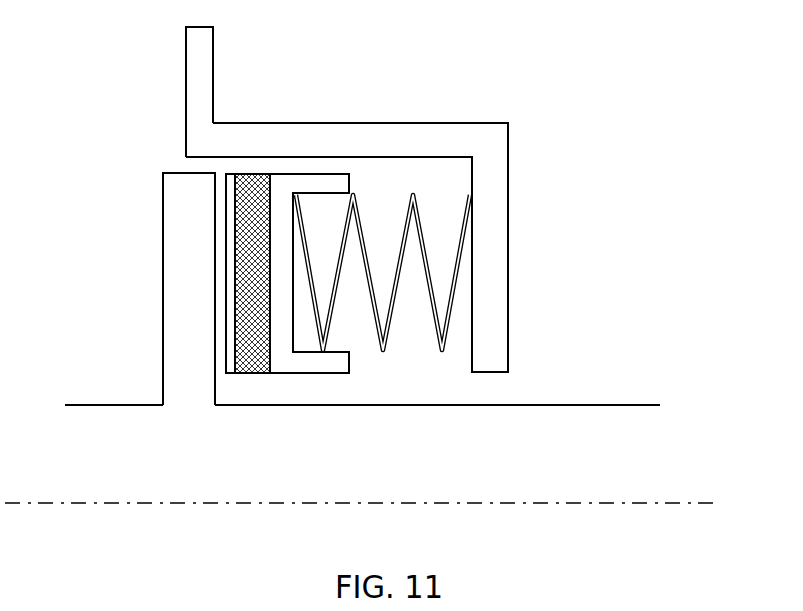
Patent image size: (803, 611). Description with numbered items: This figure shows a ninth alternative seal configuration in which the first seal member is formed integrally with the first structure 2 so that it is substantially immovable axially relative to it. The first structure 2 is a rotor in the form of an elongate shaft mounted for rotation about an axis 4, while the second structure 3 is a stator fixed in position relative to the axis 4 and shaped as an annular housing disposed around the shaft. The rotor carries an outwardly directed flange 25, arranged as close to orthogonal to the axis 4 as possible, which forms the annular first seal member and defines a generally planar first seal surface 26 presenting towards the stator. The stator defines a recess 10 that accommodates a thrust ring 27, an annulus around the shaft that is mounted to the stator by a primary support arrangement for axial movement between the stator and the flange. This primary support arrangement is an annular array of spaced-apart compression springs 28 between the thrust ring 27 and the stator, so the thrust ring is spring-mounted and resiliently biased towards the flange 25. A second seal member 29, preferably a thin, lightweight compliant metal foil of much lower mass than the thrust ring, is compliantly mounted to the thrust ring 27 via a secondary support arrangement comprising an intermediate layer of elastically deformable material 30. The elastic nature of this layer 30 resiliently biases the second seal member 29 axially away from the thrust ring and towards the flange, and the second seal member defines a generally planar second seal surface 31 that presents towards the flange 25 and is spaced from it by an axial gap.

The first structure 2 is at (573, 427).
The second structure 3 is at (195, 88).
The axis 4 is at (547, 503).
The recess 10 is at (452, 177).
The flange 25 is at (178, 267).
The first seal surface 26 is at (217, 184).
The thrust ring 27 is at (317, 183).
The compression springs 28 is at (430, 290).
The second seal member 29 is at (228, 178).
The intermediate layer of elastically deformable material 30 is at (253, 176).
The second seal surface 31 is at (222, 345).